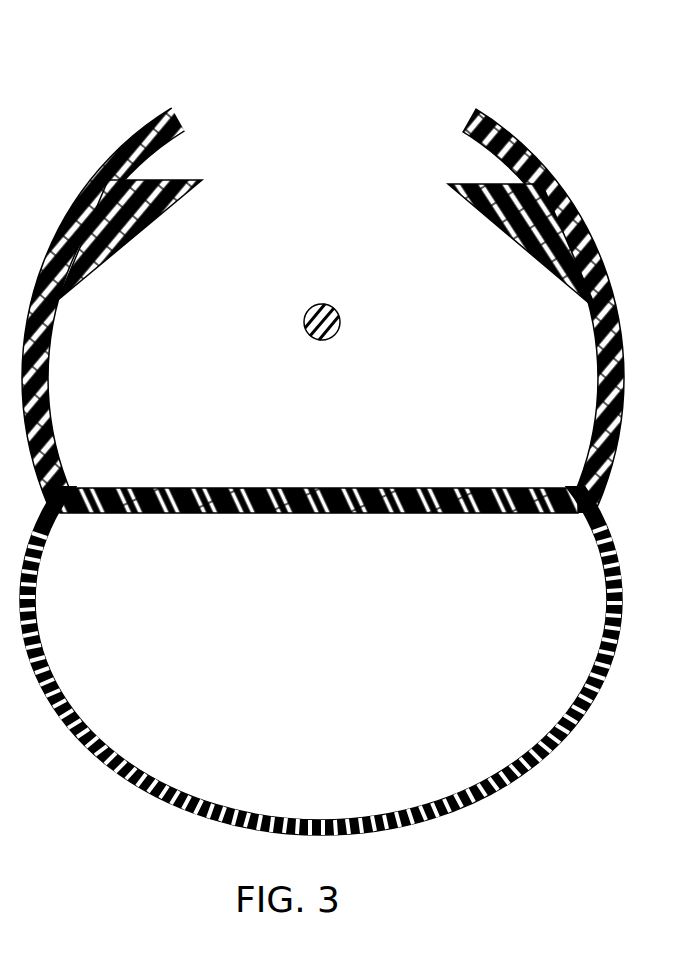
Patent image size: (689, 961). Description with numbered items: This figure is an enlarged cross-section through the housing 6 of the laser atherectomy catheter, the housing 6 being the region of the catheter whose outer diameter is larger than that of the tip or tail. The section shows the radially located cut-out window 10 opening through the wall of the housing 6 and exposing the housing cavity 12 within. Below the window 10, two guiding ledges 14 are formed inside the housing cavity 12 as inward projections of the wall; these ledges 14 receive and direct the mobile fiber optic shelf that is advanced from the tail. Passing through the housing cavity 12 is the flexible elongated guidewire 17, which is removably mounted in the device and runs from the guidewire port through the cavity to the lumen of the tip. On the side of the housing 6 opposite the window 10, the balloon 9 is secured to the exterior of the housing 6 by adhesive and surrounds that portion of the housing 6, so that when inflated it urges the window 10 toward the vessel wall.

The housing 6 is at (620, 368).
The balloon 9 is at (560, 738).
The cut-out window 10 is at (377, 68).
The housing cavity 12 is at (253, 375).
The guiding ledge 14 is at (165, 207).
The guidewire 17 is at (337, 327).